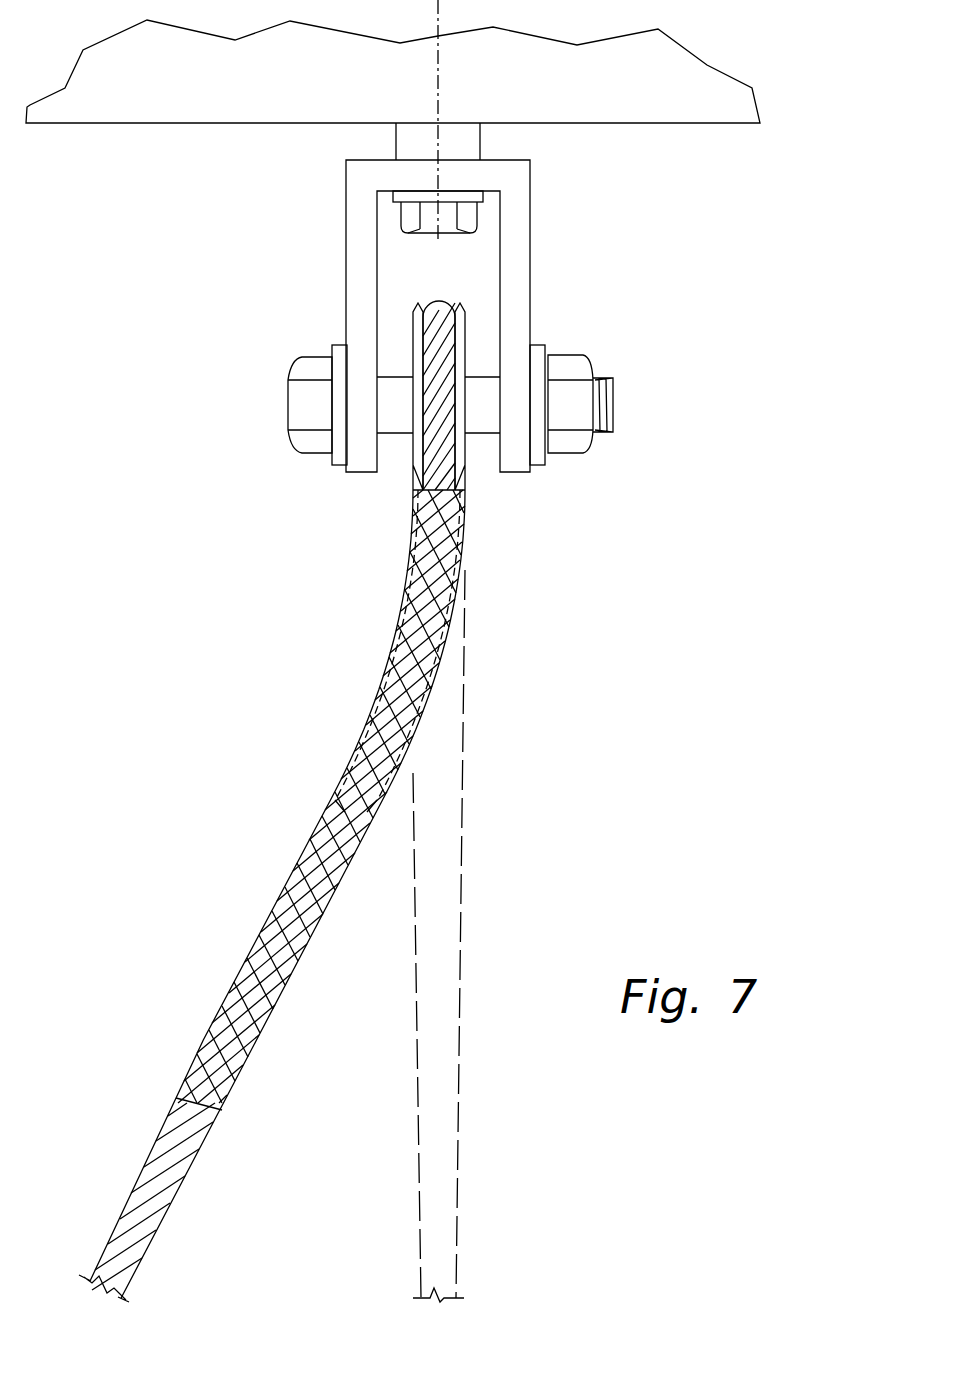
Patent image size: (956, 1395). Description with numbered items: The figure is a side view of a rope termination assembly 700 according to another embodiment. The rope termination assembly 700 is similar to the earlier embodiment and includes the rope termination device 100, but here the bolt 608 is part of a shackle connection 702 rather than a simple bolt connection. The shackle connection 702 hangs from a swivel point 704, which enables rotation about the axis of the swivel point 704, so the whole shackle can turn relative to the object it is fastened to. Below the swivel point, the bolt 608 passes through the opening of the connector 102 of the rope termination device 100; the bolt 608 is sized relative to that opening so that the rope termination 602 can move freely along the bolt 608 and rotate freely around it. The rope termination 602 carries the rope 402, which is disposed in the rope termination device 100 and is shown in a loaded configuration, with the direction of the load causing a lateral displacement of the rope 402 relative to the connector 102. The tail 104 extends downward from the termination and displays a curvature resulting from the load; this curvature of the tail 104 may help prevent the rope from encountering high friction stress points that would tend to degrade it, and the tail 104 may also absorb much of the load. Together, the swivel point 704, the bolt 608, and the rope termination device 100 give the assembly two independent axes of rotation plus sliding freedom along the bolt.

The rope termination device 100 is at (416, 305).
The connector 102 is at (461, 305).
The tail 104 is at (400, 626).
The rope 402 is at (437, 350).
The rope termination 602 is at (484, 515).
The bolt 608 is at (614, 403).
The rope termination assembly 700 is at (246, 523).
The shackle connection 702 is at (531, 243).
The swivel point 704 is at (483, 141).